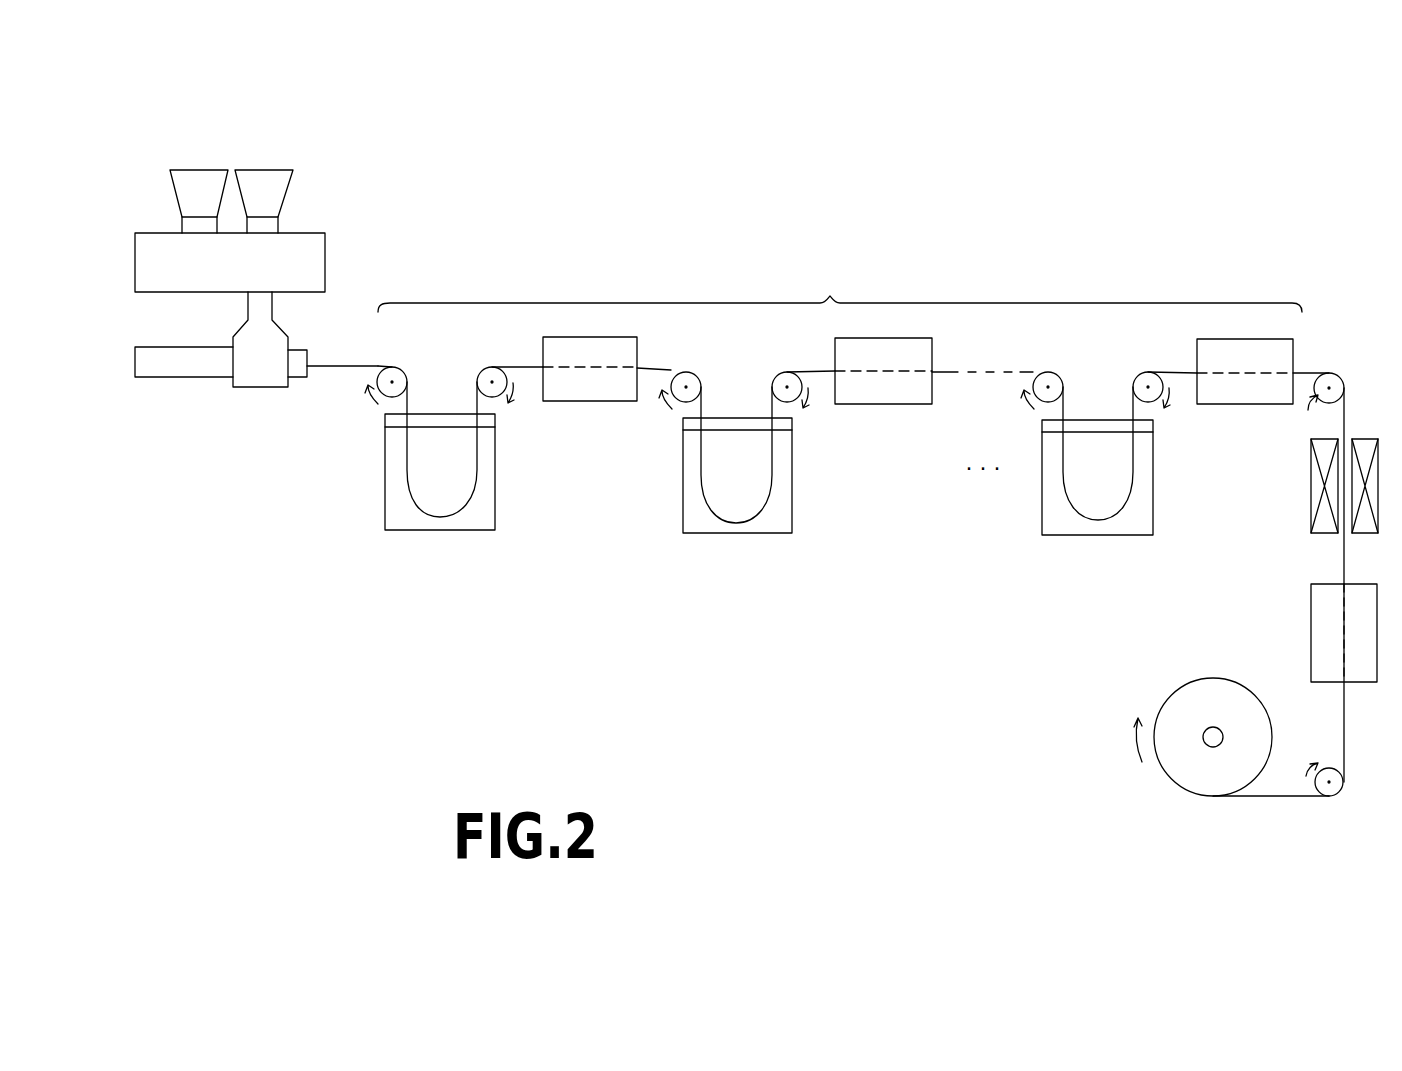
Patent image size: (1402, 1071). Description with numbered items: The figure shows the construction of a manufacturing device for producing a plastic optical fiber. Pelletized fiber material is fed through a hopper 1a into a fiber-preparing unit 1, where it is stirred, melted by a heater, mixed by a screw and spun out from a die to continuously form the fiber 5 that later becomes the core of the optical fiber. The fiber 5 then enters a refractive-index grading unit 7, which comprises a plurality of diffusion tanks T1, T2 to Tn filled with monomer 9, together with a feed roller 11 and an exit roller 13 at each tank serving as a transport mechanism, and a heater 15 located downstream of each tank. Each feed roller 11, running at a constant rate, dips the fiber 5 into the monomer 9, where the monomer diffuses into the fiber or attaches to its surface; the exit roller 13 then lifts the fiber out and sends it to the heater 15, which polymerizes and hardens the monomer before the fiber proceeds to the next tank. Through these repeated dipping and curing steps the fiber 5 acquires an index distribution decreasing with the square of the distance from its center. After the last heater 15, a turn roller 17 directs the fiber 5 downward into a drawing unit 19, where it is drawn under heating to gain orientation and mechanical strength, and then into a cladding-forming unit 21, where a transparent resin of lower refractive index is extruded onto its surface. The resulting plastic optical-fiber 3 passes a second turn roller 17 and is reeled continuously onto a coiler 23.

The fiber-preparing unit 1 is at (230, 286).
The hopper 1a is at (220, 170).
The plastic optical-fiber 3 is at (1346, 737).
The fiber 5 is at (327, 362).
The refractive-index grading unit 7 is at (840, 283).
The monomer 9 is at (487, 518).
The feed roller 11 is at (395, 368).
The exit roller 13 is at (492, 368).
The heater 15 is at (598, 402).
The turn roller 17 is at (1333, 376).
The drawing unit 19 is at (1305, 500).
The cladding-forming unit 21 is at (1311, 641).
The coiler 23 is at (1178, 762).
The diffusion tank T1 is at (400, 530).
The diffusion tank T2 is at (695, 533).
The diffusion tank Tn is at (1058, 535).